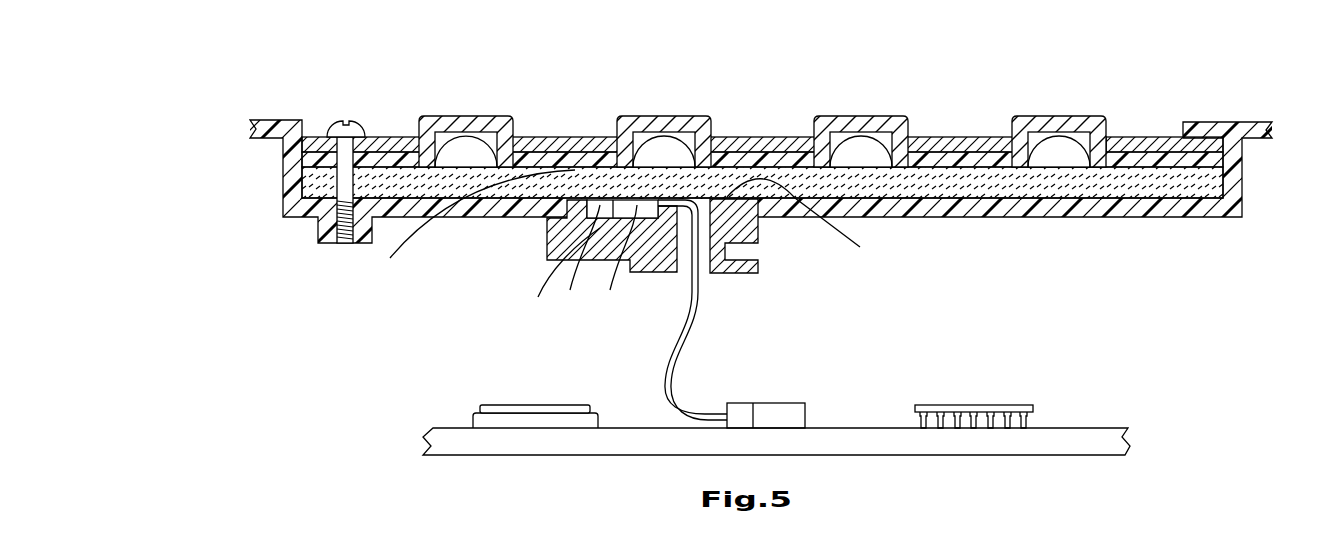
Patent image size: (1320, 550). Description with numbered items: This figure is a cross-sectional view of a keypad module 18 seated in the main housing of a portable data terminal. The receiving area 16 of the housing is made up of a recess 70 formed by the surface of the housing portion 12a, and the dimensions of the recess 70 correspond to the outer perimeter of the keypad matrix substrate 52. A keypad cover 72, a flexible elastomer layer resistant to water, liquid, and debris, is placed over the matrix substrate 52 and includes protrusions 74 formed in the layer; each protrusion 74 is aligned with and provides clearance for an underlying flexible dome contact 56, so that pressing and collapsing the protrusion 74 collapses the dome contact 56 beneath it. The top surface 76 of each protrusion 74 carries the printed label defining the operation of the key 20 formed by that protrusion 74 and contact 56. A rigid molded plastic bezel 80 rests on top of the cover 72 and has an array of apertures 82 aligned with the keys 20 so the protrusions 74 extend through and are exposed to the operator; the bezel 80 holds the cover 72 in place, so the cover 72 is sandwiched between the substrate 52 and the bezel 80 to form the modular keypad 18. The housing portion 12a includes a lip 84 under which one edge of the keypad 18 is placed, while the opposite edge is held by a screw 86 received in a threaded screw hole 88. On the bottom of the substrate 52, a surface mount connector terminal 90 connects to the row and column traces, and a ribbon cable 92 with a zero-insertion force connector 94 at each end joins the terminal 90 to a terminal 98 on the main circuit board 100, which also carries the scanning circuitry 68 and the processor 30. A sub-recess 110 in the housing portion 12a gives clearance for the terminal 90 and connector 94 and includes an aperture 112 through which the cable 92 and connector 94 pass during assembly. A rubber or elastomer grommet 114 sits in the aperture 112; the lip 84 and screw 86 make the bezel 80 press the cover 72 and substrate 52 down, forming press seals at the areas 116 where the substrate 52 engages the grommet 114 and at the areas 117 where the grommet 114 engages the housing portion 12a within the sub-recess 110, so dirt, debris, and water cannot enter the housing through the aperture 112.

The housing portion 12a is at (273, 120).
The receiving area 16 is at (733, 152).
The keypad module 18 is at (761, 152).
The key 20 is at (766, 94).
The processor 30 is at (520, 405).
The keypad matrix substrate 52 is at (1177, 187).
The flexible dome contact 56 is at (683, 138).
The scanning circuitry 68 is at (998, 404).
The recess 70 is at (1286, 162).
The keypad cover 72 is at (405, 137).
The protrusion 74 is at (617, 130).
The top surface 76 is at (653, 116).
The bezel 80 is at (1158, 137).
The aperture 82 is at (1006, 122).
The lip 84 is at (1200, 122).
The screw 86 is at (357, 128).
The threaded screw hole 88 is at (308, 238).
The surface mount connector terminal 90 is at (575, 267).
The ribbon cable 92 is at (696, 313).
The zero-insertion force connector 94 is at (678, 316).
The terminal 98 is at (721, 316).
The main circuit board 100 is at (1072, 437).
The sub-recess 110 is at (622, 265).
The aperture 112 is at (710, 287).
The grommet 114 is at (745, 222).
The press seal areas 116 is at (642, 223).
The press seal areas 117 is at (546, 272).